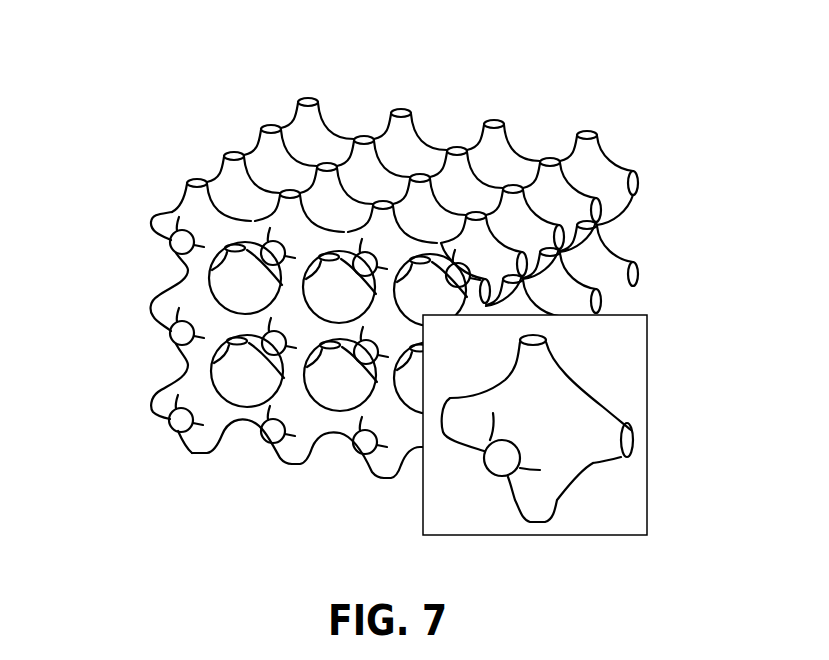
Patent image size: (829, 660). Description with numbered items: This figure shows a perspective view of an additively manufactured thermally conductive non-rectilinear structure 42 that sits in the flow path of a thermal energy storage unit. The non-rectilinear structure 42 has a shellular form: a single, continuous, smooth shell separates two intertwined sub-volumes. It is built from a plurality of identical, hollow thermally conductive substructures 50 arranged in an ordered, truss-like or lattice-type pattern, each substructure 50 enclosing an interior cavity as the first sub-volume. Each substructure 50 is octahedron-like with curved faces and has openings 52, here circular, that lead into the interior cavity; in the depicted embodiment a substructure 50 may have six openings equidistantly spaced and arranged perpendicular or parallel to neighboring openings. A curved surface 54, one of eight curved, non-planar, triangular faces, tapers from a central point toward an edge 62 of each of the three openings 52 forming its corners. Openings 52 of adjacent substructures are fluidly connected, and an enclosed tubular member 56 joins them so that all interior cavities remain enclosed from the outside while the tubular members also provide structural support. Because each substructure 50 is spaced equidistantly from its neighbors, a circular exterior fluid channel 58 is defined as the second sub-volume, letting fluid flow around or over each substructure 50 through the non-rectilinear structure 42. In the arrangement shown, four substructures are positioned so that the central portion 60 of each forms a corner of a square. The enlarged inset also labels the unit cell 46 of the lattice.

The non-rectilinear structure 42 is at (265, 100).
The unit cell 46 is at (285, 220).
The thermally conductive substructure 50 is at (262, 253).
The opening 52 is at (552, 340).
The curved surface 54 is at (557, 408).
The enclosed tubular member 56 is at (242, 320).
The exterior fluid channel 58 is at (238, 378).
The central portion 60 is at (526, 436).
The edge 62 is at (557, 353).